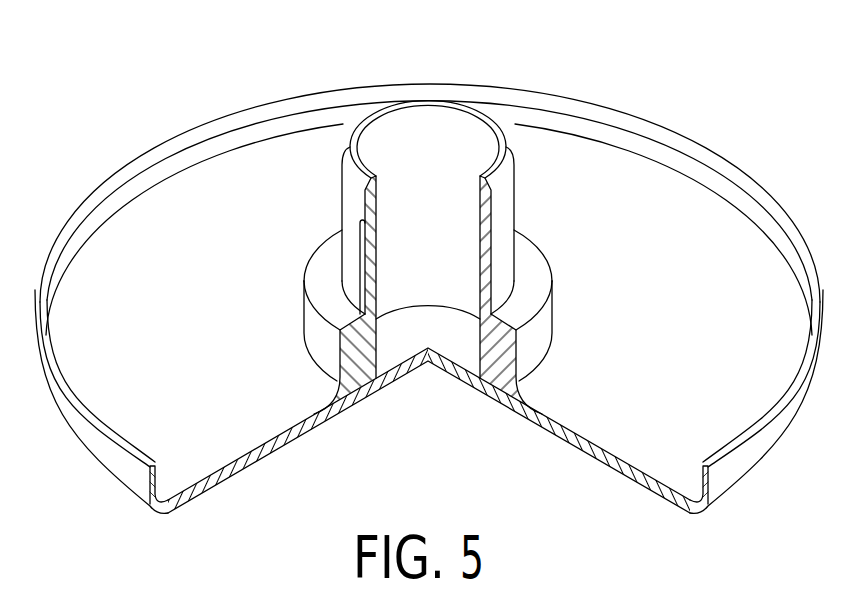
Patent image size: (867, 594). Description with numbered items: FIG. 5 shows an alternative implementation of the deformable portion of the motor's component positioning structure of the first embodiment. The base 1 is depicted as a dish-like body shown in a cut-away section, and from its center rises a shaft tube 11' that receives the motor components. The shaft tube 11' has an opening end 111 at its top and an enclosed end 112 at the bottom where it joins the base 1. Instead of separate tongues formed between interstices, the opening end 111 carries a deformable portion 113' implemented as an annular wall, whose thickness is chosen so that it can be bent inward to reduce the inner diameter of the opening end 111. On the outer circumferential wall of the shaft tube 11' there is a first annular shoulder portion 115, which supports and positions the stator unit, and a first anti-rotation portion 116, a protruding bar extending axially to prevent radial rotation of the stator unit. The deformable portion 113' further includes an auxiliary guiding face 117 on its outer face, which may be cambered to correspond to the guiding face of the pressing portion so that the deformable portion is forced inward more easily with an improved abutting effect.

The base 1 is at (723, 478).
The shaft tube 11' is at (562, 238).
The opening end 111 is at (477, 110).
The enclosed end 112 is at (407, 373).
The deformable portion 113' is at (576, 213).
The first annular shoulder portion 115 is at (313, 285).
The first anti-rotation portion 116 is at (343, 230).
The auxiliary guiding face 117 is at (344, 157).